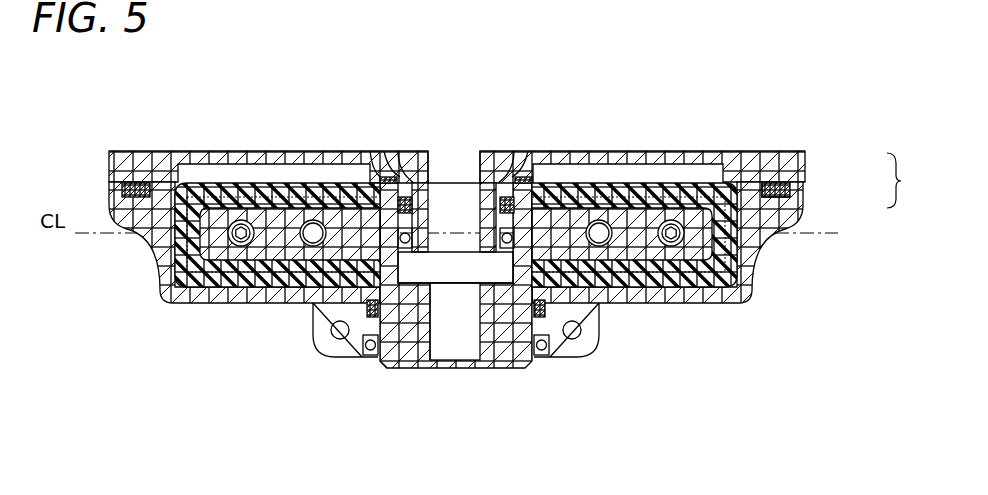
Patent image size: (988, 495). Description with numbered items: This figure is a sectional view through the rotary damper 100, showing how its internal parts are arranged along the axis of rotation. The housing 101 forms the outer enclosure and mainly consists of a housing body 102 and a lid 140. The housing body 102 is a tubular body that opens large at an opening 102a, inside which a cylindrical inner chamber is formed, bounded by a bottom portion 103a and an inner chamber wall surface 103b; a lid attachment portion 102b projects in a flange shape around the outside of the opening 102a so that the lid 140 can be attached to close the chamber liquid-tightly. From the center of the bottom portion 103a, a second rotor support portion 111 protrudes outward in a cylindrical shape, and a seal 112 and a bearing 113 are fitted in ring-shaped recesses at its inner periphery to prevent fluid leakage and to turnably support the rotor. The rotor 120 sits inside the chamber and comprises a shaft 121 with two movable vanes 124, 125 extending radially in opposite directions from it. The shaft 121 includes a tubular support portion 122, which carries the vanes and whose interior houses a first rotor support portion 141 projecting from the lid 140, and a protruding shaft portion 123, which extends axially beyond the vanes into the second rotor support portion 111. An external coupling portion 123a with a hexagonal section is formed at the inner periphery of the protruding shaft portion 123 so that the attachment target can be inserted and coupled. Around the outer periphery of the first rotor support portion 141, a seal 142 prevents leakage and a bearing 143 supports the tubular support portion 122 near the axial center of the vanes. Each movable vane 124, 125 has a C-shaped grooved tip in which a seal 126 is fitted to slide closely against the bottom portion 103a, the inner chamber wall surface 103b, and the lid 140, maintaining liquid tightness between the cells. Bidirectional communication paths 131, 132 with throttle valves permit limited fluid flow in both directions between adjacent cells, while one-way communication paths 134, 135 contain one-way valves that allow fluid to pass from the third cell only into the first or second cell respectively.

The rotary damper 100 is at (151, 92).
The housing 101 is at (912, 180).
The housing body 102 is at (800, 195).
The opening 102a is at (724, 165).
The lid attachment portion 102b is at (790, 183).
The bottom portion 103a is at (700, 283).
The inner chamber wall surface 103b is at (737, 262).
The second rotor support portion 111 is at (532, 318).
The seal 112 is at (487, 343).
The bearing 113 is at (542, 357).
The rotor 120 is at (380, 368).
The shaft 121 is at (370, 160).
The tubular support portion 122 is at (420, 160).
The protruding shaft portion 123 is at (397, 373).
The external coupling portion 123a is at (433, 350).
The movable vane 124 is at (588, 183).
The movable vane 125 is at (278, 183).
The seal 126 is at (218, 182).
The bidirectional communication path 131 is at (675, 183).
The bidirectional communication path 132 is at (258, 243).
The one-way communication path 134 is at (612, 245).
The one-way communication path 135 is at (312, 183).
The lid 140 is at (800, 167).
The first rotor support portion 141 is at (523, 160).
The seal 142 is at (400, 157).
The bearing 143 is at (478, 160).